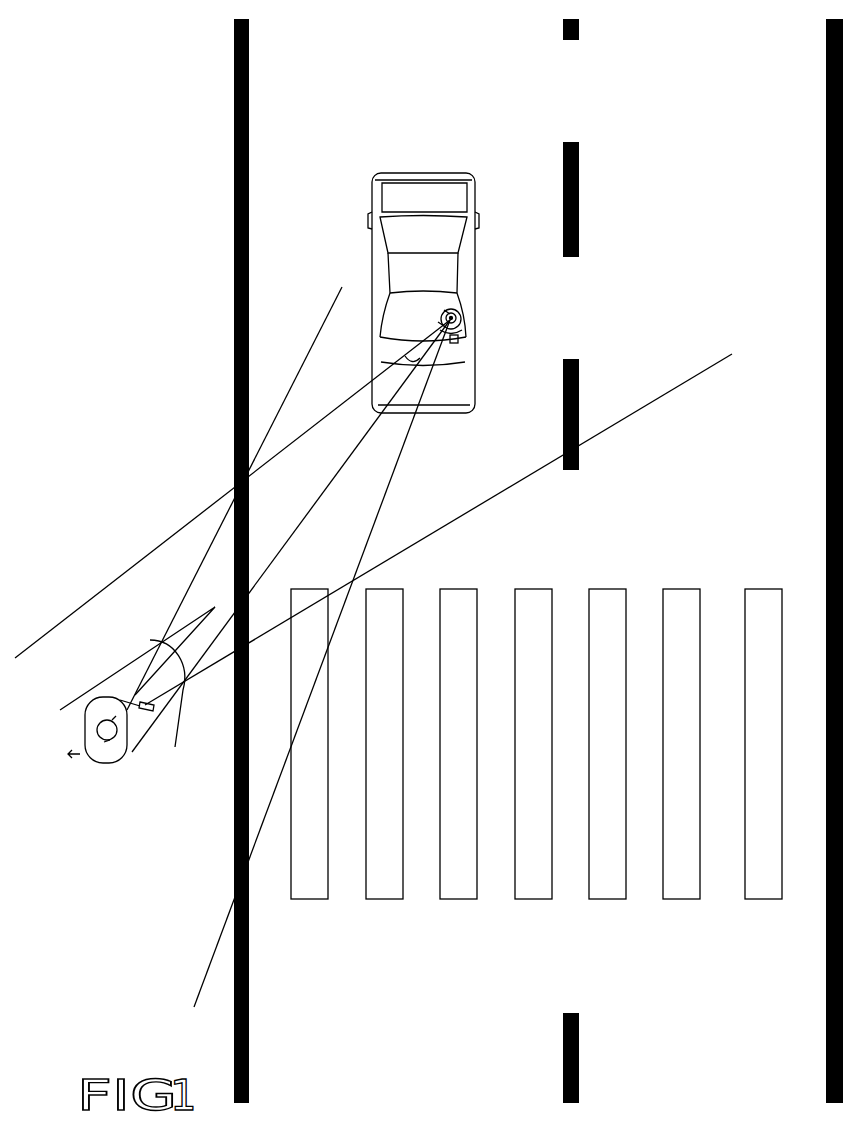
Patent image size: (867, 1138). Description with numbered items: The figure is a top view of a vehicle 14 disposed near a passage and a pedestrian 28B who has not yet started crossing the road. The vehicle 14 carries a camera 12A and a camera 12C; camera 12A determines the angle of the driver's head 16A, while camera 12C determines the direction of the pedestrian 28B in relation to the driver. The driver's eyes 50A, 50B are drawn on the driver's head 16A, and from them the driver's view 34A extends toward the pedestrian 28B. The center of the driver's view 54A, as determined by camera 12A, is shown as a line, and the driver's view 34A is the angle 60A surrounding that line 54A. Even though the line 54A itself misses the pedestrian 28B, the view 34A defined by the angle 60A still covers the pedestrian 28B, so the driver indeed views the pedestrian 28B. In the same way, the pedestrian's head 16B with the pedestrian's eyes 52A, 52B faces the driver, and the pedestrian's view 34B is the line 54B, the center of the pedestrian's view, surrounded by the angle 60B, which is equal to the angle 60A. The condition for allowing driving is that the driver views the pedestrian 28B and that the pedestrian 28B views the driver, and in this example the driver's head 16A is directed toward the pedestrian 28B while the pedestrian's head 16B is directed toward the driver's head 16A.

The vehicle 14 is at (428, 190).
The camera 12A is at (456, 312).
The camera 12C is at (459, 339).
The driver's head 16A is at (462, 327).
The driver's eye 50A is at (446, 314).
The driver's eye 50B is at (441, 326).
The angle surrounding driver's center of view 60A is at (410, 362).
The driver's view 34A is at (152, 547).
The pedestrian's view 34B is at (213, 668).
The center of driver's view 54A is at (302, 523).
The center of pedestrian's view 54B is at (135, 750).
The pedestrian's head 16B is at (68, 755).
The angle surrounding pedestrian's center of view 60B is at (97, 732).
The pedestrian 28B is at (99, 762).
The pedestrian's eye 52A is at (122, 745).
The pedestrian's eye 52B is at (110, 752).